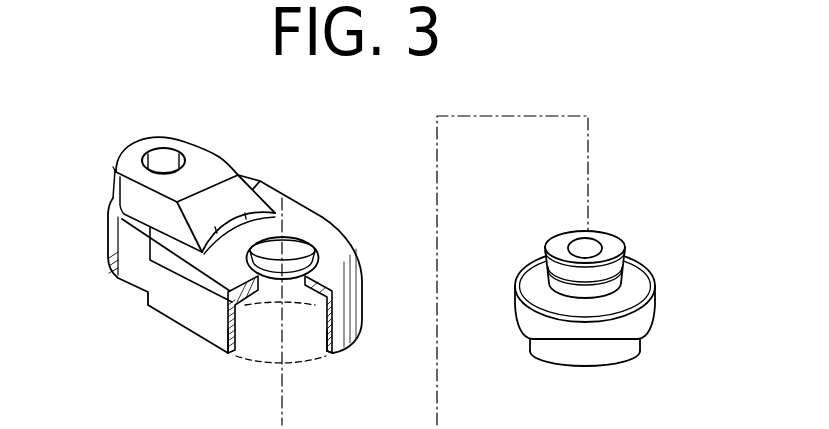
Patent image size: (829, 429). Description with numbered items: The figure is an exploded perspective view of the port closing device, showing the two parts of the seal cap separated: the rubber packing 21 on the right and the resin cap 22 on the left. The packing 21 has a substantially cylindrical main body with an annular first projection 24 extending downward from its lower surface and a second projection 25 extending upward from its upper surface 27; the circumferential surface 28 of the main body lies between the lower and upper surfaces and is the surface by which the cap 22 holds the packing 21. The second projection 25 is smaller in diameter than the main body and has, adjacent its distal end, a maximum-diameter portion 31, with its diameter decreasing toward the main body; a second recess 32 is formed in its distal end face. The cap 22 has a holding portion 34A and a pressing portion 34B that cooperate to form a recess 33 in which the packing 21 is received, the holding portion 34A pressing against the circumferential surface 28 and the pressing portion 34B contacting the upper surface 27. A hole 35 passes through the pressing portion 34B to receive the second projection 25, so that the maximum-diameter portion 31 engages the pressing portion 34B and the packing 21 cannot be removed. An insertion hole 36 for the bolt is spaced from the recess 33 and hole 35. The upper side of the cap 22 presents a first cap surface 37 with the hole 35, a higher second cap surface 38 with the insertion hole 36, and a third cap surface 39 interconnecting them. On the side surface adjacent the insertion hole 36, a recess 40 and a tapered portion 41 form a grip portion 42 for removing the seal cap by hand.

The packing 21 is at (648, 255).
The cap 22 is at (309, 206).
The first projection 24 is at (577, 347).
The second projection 25 is at (557, 233).
The upper surface 27 is at (633, 263).
The circumferential surface 28 is at (527, 313).
The maximum-diameter portion 31 is at (607, 268).
The second recess 32 is at (590, 243).
The recess 33 is at (277, 332).
The holding portion 34A is at (229, 338).
The pressing portion 34B is at (226, 302).
The hole 35 is at (300, 238).
The insertion hole 36 is at (163, 158).
The first cap surface 37 is at (338, 260).
The second cap surface 38 is at (207, 165).
The third cap surface 39 is at (236, 188).
The recess 40 is at (110, 203).
The tapered portion 41 is at (116, 170).
The grip portion 42 is at (112, 187).